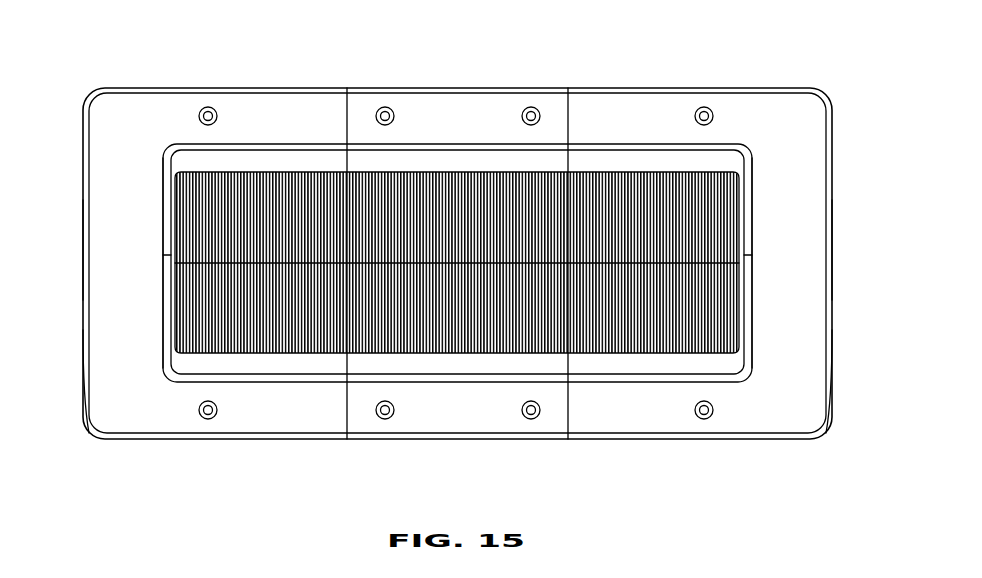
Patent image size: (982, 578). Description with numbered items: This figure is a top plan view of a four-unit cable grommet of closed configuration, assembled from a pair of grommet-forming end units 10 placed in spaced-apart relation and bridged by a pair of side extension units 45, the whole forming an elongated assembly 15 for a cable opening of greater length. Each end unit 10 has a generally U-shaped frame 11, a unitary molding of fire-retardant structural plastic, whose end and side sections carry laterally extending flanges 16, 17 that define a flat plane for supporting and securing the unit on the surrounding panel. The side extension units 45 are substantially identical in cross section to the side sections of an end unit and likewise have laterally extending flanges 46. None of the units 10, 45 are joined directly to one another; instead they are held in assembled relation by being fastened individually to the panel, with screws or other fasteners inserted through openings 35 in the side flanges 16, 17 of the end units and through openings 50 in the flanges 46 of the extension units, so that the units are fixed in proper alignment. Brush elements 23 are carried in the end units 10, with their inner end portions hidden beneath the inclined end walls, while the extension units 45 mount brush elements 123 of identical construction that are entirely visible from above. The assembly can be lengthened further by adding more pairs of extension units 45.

The grommet-forming end unit 10 is at (144, 273).
The frame 11 is at (108, 159).
The laterally extending flange 15 is at (103, 357).
The side flange 16 is at (427, 75).
The side flange 17 is at (280, 113).
The brush element 23 is at (618, 178).
The opening 35 is at (208, 106).
The side extension unit 45 is at (492, 130).
The laterally extending flange 46 is at (405, 102).
The opening 50 is at (533, 104).
The brush element 123 is at (432, 210).